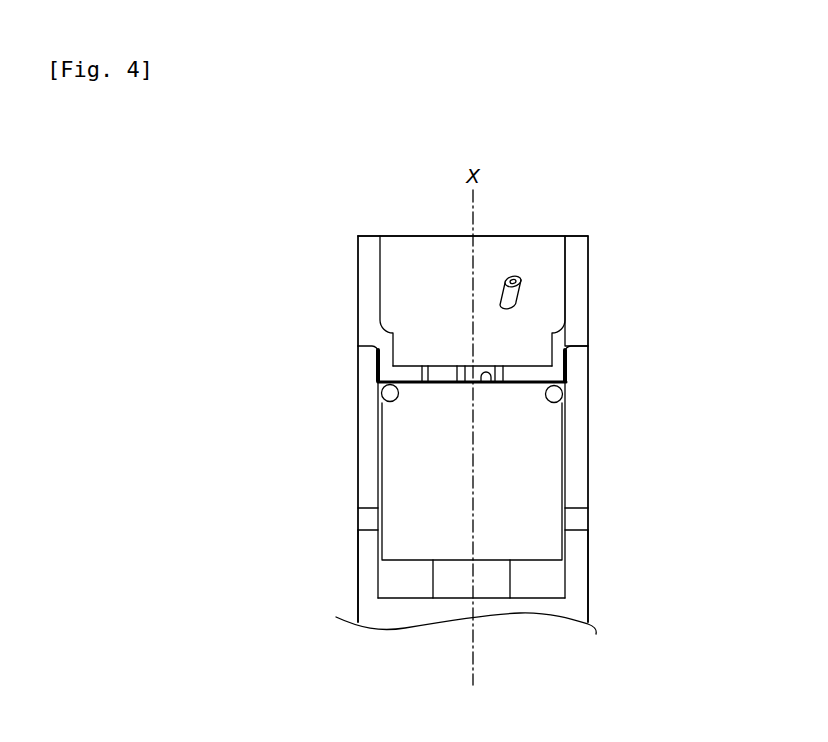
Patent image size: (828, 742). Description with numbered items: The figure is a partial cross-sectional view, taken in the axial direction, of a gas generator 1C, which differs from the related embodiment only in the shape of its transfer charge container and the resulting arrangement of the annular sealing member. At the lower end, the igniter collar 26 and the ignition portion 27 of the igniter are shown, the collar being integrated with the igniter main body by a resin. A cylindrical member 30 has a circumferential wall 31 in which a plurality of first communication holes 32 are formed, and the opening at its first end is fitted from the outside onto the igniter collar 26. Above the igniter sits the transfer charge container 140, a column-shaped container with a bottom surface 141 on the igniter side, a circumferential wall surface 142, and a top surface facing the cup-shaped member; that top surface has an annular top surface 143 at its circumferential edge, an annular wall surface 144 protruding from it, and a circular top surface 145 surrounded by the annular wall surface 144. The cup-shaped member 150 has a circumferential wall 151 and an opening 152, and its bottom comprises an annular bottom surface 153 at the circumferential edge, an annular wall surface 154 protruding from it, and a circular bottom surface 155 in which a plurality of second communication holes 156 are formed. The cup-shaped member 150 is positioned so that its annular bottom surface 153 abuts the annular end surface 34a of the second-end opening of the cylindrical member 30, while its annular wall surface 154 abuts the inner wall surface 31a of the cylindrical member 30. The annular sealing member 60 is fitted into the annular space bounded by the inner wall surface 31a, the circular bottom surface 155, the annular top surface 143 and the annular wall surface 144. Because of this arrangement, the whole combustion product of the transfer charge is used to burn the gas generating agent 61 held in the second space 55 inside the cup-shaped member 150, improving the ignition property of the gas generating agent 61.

The gas generator 1C is at (519, 216).
The cup-shaped member 150 is at (596, 270).
The circumferential wall 151 is at (357, 284).
The opening 152 is at (423, 236).
The second space 55 is at (472, 309).
The annular bottom surface 153 is at (360, 347).
The annular end surface 34a is at (575, 346).
The annular wall surface 154 is at (375, 372).
The annular wall surface 144 is at (567, 383).
The circular bottom surface 155 is at (442, 374).
The second communication holes 156 is at (497, 374).
The circular top surface 145 is at (488, 385).
The gas generating agent 61 is at (521, 282).
The annular sealing member 60 is at (396, 402).
The annular top surface 143 is at (557, 399).
The cylindrical member 30 is at (592, 457).
The circumferential wall surface 142 is at (564, 497).
The first communication holes 32 is at (572, 520).
The circumferential wall 31 is at (587, 568).
The inner wall surface 31a is at (390, 575).
The transfer charge container 140 is at (472, 481).
The ignition portion 27 is at (458, 578).
The igniter collar 26 is at (502, 605).
The bottom surface 141 is at (522, 565).